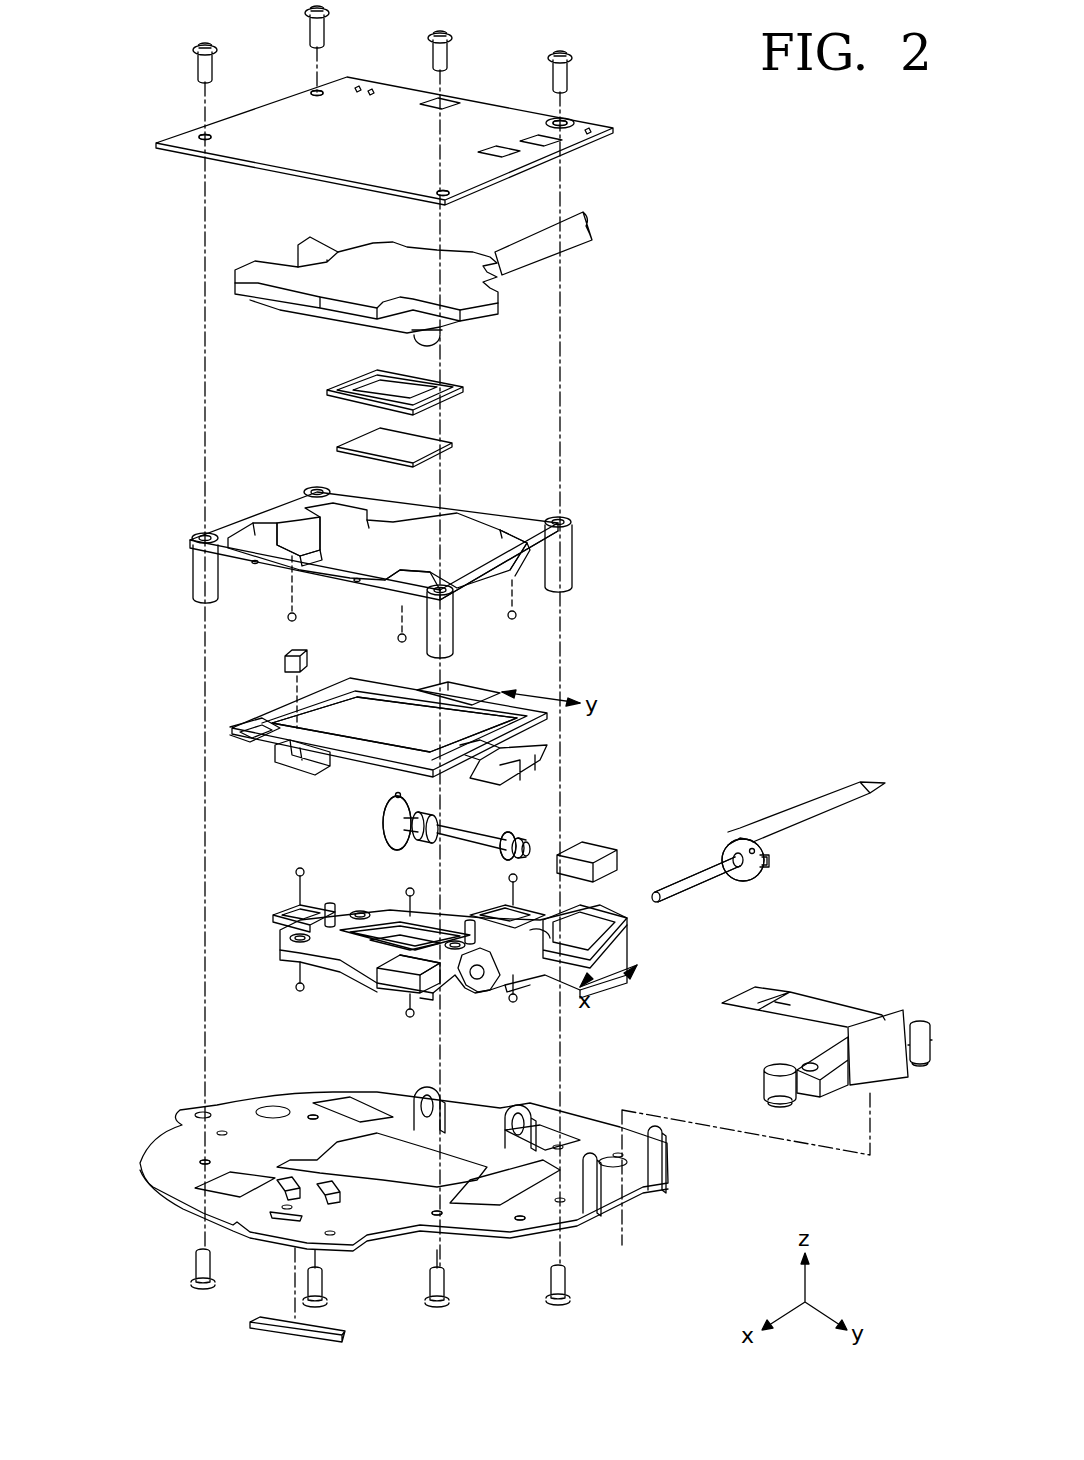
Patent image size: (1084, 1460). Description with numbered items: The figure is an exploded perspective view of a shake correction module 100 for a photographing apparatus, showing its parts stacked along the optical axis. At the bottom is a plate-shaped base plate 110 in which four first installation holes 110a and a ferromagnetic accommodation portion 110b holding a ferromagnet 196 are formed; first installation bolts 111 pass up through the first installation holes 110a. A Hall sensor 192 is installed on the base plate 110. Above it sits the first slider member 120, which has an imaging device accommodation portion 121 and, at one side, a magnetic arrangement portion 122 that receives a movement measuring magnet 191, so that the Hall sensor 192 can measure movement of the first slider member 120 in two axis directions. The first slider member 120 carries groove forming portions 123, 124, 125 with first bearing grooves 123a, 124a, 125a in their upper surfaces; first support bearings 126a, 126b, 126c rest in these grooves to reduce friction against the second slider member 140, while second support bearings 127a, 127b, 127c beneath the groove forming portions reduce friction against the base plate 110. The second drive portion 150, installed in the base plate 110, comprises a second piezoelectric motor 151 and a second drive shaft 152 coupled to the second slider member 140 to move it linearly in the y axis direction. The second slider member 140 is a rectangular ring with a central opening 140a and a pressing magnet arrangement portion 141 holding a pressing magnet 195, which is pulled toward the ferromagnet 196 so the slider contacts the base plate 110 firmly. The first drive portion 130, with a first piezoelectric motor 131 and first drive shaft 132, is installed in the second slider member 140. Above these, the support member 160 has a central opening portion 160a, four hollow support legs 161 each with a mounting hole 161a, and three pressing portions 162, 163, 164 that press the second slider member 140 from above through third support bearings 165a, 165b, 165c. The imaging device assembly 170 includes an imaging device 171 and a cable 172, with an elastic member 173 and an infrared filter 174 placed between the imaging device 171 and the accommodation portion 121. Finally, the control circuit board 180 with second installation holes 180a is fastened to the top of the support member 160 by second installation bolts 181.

The shake correction module 100 is at (755, 349).
The base plate 110 is at (148, 1116).
The first installation holes 110a is at (312, 1114).
The ferromagnetic accommodation portion 110b is at (330, 1197).
The first installation bolts 111 is at (567, 1282).
The first slider member 120 is at (272, 944).
The imaging device accommodation portion 121 is at (290, 920).
The magnetic arrangement portion 122 is at (608, 972).
The groove forming portion 123 is at (288, 905).
The first bearing groove 123a is at (330, 902).
The groove forming portion 124 is at (393, 985).
The first bearing groove 124a is at (385, 976).
The groove forming portion 125 is at (494, 914).
The first bearing groove 125a is at (520, 926).
The first support bearing 126a is at (298, 868).
The first support bearing 126b is at (406, 890).
The first support bearing 126c is at (517, 874).
The second support bearing 127a is at (296, 987).
The second support bearing 127b is at (414, 1017).
The second support bearing 127c is at (515, 1002).
The first drive portion 130 is at (788, 870).
The first piezoelectric motor 131 is at (752, 880).
The first drive shaft 132 is at (684, 893).
The second slider member 140 is at (226, 712).
The opening 140a is at (392, 711).
The pressing magnet arrangement portion 141 is at (293, 779).
The second drive portion 150 is at (543, 810).
The second piezoelectric motor 151 is at (383, 822).
The second drive shaft 152 is at (477, 840).
The support member 160 is at (182, 528).
The opening portion 160a is at (548, 582).
The support legs 161 is at (568, 551).
The mounting hole 161a is at (568, 520).
The pressing portion 162 is at (293, 522).
The pressing portion 163 is at (437, 566).
The pressing portion 164 is at (500, 530).
The third support bearing 165a is at (287, 617).
The third support bearing 165b is at (396, 638).
The third support bearing 165c is at (517, 615).
The imaging device assembly 170 is at (265, 240).
The imaging device 171 is at (442, 345).
The cable 172 is at (542, 258).
The elastic member 173 is at (462, 386).
The infrared filter 174 is at (453, 442).
The control circuit board 180 is at (597, 152).
The second installation holes 180a is at (317, 91).
The second installation bolts 181 is at (566, 58).
The movement measuring magnet 191 is at (598, 857).
The Hall sensor 192 is at (797, 1053).
The pressing magnet 195 is at (283, 661).
The ferromagnet 196 is at (290, 1333).